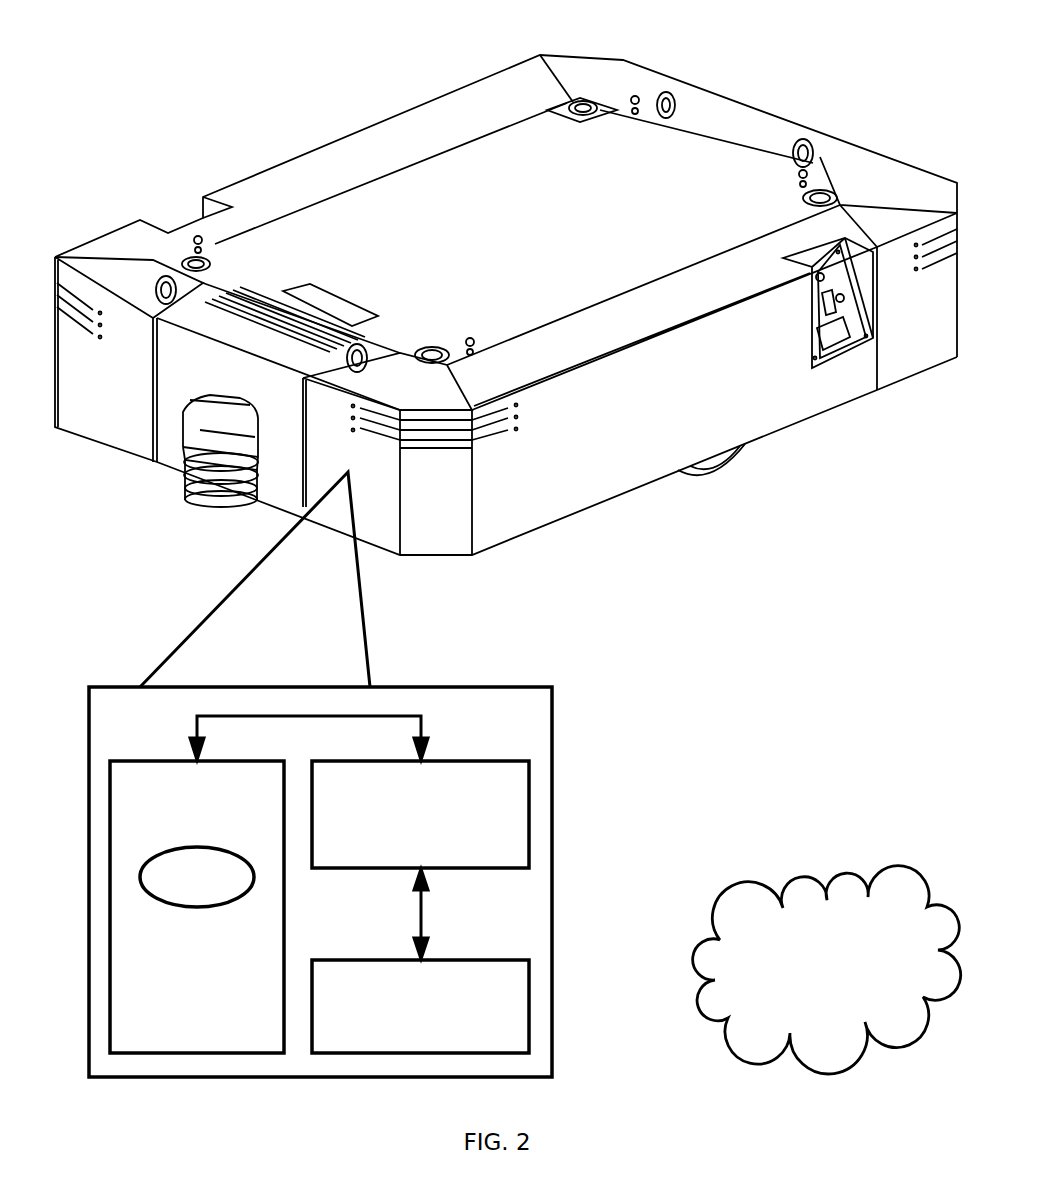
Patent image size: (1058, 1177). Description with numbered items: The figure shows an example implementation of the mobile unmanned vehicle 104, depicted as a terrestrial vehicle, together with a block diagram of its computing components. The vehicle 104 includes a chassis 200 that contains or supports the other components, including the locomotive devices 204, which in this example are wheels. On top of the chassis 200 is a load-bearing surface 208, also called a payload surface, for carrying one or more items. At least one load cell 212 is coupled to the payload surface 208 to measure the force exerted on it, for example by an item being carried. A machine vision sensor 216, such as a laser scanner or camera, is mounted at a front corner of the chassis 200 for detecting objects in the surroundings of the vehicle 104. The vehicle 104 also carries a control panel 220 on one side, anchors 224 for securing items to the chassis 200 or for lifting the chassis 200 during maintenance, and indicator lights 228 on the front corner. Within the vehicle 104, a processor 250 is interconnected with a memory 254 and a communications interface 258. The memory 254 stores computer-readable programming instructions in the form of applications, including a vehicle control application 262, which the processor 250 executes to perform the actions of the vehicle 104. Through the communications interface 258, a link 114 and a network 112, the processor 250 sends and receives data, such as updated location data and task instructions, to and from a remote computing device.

The mobile unmanned vehicle 104 is at (168, 594).
The network 112 is at (827, 970).
The link 114 is at (531, 1005).
The chassis 200 is at (872, 170).
The locomotive devices 204 is at (718, 452).
The load-bearing surface 208 is at (485, 229).
The load cell 212 is at (580, 100).
The machine vision sensor 216 is at (187, 497).
The control panel 220 is at (840, 333).
The anchors 224 is at (672, 95).
The indicator lights 228 is at (505, 433).
The processor 250 is at (420, 814).
The memory 254 is at (197, 907).
The communications interface 258 is at (420, 1006).
The vehicle control application 262 is at (197, 877).